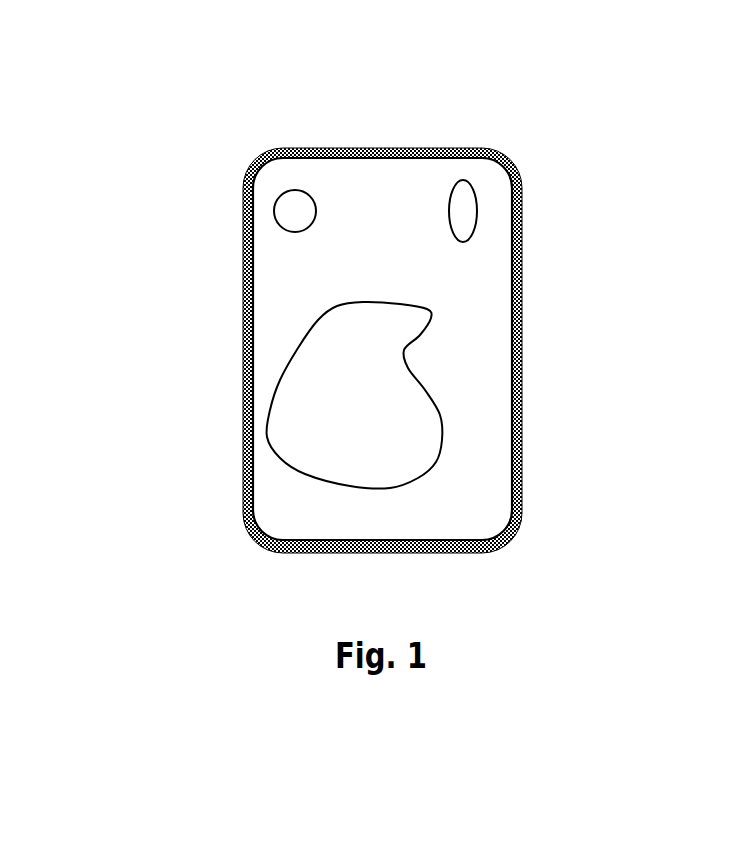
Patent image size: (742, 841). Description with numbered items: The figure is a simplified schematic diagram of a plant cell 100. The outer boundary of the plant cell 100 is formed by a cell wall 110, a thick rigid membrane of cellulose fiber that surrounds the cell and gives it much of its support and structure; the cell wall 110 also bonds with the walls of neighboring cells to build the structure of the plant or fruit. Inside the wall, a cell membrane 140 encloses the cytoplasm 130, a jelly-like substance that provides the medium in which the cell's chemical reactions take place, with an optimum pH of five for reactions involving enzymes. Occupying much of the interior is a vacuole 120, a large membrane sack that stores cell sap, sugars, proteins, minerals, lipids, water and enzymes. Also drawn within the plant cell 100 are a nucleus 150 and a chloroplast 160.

The plant cell 100 is at (371, 306).
The cell wall 110 is at (522, 290).
The vacuole 120 is at (295, 451).
The cytoplasm 130 is at (480, 510).
The cell membrane 140 is at (520, 387).
The nucleus 150 is at (293, 212).
The chloroplast 160 is at (478, 211).